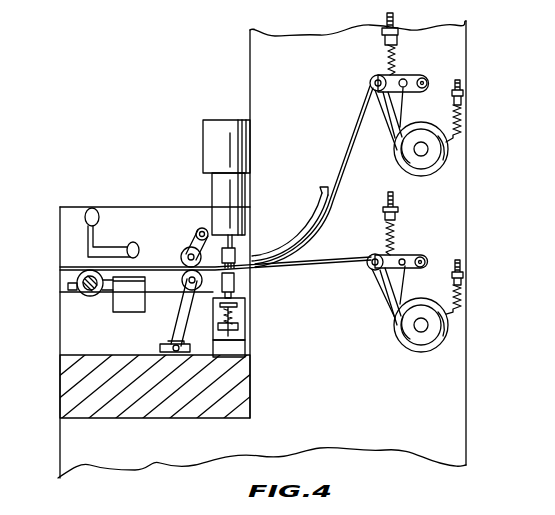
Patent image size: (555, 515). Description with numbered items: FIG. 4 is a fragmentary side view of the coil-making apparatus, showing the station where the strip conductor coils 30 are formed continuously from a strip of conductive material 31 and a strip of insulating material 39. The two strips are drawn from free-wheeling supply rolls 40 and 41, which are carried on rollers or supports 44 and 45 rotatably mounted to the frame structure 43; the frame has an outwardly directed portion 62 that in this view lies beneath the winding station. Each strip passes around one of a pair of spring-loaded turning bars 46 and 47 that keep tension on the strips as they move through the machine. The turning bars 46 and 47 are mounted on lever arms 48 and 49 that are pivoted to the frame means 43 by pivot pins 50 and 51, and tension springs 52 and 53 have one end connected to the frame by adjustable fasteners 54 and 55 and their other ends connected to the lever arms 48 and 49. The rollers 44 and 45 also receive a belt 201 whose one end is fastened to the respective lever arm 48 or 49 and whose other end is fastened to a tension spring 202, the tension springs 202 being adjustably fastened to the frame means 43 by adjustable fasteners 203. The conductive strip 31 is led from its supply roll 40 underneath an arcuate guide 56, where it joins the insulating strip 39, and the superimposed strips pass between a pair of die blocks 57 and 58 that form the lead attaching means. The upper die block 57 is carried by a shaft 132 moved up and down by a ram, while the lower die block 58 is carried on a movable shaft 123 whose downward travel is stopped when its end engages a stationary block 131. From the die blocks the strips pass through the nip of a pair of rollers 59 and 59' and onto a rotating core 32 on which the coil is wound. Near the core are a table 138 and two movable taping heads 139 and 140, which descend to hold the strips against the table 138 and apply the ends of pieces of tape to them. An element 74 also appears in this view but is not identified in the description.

The strip conductor coil 30 is at (550, 361).
The strip of conductive material 31 is at (344, 147).
The core 32 is at (78, 279).
The strip of insulating material 39 is at (337, 257).
The supply roll 40 is at (450, 142).
The supply roll 41 is at (448, 330).
The frame structure 43 is at (250, 78).
The roller 44 is at (427, 154).
The roller 45 is at (450, 313).
The turning bar 46 is at (370, 82).
The turning bar 47 is at (372, 271).
The lever arm 48 is at (410, 77).
The lever arm 49 is at (415, 267).
The pivot pin 50 is at (428, 82).
The pivot pin 51 is at (430, 261).
The tension spring 52 is at (395, 62).
The tension spring 53 is at (390, 246).
The adjustable fastener 54 is at (386, 22).
The adjustable fastener 55 is at (395, 217).
The arcuate guide 56 is at (320, 203).
The upper die block 57 is at (236, 255).
The die block 58 is at (240, 283).
The roller 59 is at (184, 242).
The roller 59' is at (174, 311).
The outwardly directed portion 62 is at (68, 387).
The frame member 74 is at (552, 414).
The shaft 123 is at (240, 310).
The stationary block 131 is at (242, 338).
The shaft 132 is at (244, 237).
The table 138 is at (127, 303).
The taping head 139 is at (141, 244).
The taping head 140 is at (88, 209).
The belt 201 is at (450, 133).
The tension spring 202 is at (463, 120).
The adjustable fastener 203 is at (465, 98).